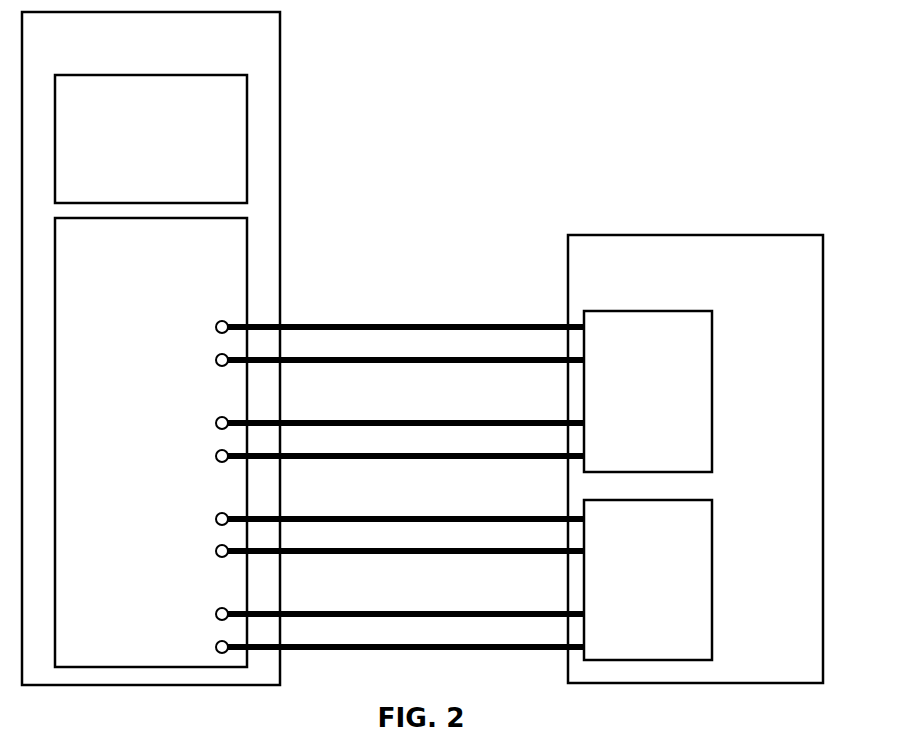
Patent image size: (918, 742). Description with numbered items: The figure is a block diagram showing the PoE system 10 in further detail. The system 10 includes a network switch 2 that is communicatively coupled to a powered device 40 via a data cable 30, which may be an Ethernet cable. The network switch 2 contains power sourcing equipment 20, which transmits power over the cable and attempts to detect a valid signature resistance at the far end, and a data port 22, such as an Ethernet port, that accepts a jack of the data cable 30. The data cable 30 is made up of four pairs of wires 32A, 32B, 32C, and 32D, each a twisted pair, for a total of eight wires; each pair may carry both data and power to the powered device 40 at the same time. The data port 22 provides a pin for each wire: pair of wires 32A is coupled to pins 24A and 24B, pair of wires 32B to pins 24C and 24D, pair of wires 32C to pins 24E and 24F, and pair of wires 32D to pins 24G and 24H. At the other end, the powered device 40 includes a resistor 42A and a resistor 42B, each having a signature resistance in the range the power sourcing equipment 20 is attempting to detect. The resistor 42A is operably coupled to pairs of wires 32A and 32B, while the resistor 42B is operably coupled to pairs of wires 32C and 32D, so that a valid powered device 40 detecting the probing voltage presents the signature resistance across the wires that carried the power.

The system 10 is at (731, 60).
The network switch 2 is at (158, 63).
The power sourcing equipment 20 is at (139, 188).
The data port 22 is at (163, 276).
The pin 24A is at (216, 323).
The pin 24B is at (216, 356).
The pin 24C is at (216, 419).
The pin 24D is at (216, 452).
The pin 24E is at (216, 515).
The pin 24F is at (216, 547).
The pin 24G is at (216, 610).
The pin 24H is at (216, 643).
The data cable 30 is at (423, 310).
The pair of wires 32A is at (392, 318).
The pair of wires 32B is at (392, 414).
The pair of wires 32C is at (392, 510).
The pair of wires 32D is at (392, 606).
The powered device 40 is at (683, 292).
The resistor 42A is at (627, 415).
The resistor 42B is at (627, 603).